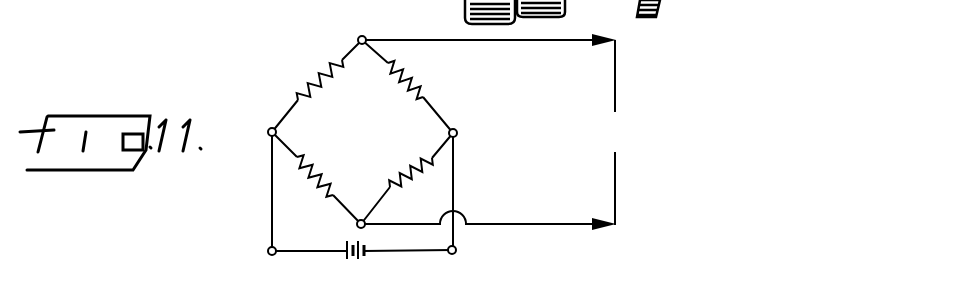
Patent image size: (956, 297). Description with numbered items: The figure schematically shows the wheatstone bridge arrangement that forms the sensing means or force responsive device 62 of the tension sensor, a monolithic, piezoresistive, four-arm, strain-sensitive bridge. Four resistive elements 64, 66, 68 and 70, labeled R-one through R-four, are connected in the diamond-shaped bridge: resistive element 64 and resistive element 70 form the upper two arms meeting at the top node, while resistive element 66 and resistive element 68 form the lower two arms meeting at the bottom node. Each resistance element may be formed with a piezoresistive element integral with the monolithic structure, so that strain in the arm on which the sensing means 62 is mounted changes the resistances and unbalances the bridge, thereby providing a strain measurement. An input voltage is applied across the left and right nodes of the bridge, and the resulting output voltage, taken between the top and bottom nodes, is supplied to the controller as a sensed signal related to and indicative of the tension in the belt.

The sensing means 62 is at (339, 44).
The resistive element 64 is at (341, 86).
The resistive element 70 is at (410, 102).
The resistive element 66 is at (327, 176).
The resistive element 68 is at (419, 160).